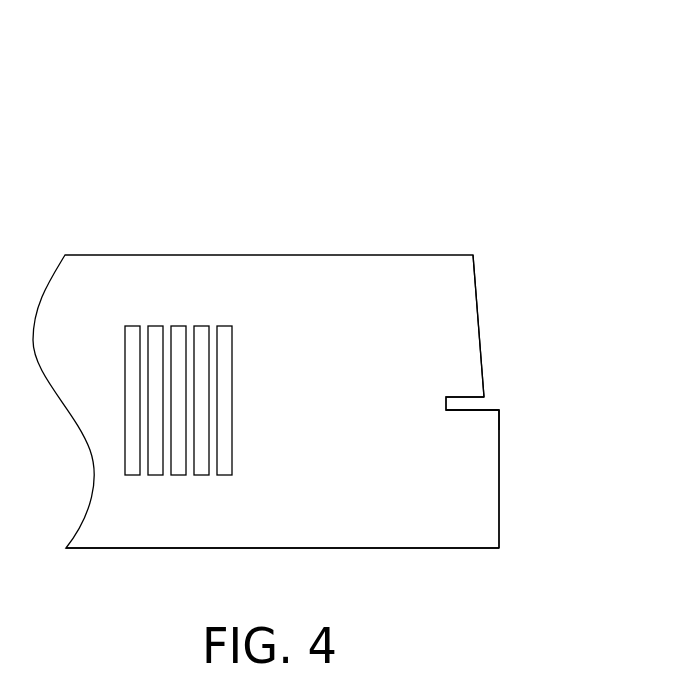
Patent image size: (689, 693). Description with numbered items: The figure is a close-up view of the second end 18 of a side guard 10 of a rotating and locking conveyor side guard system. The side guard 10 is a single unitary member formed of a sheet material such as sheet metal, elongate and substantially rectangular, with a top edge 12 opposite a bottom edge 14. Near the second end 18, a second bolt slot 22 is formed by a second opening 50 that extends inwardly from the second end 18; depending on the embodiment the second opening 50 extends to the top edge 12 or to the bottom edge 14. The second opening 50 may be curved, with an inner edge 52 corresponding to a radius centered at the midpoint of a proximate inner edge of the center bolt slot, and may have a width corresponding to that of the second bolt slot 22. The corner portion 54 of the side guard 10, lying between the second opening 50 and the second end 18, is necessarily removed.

The side guard 10 is at (168, 138).
The top edge 12 is at (252, 255).
The bottom edge 14 is at (128, 549).
The second end 18 is at (500, 493).
The second bolt slot 22 is at (460, 393).
The second opening 50 is at (498, 405).
The inner edge 52 is at (483, 327).
The corner portion 54 is at (500, 415).